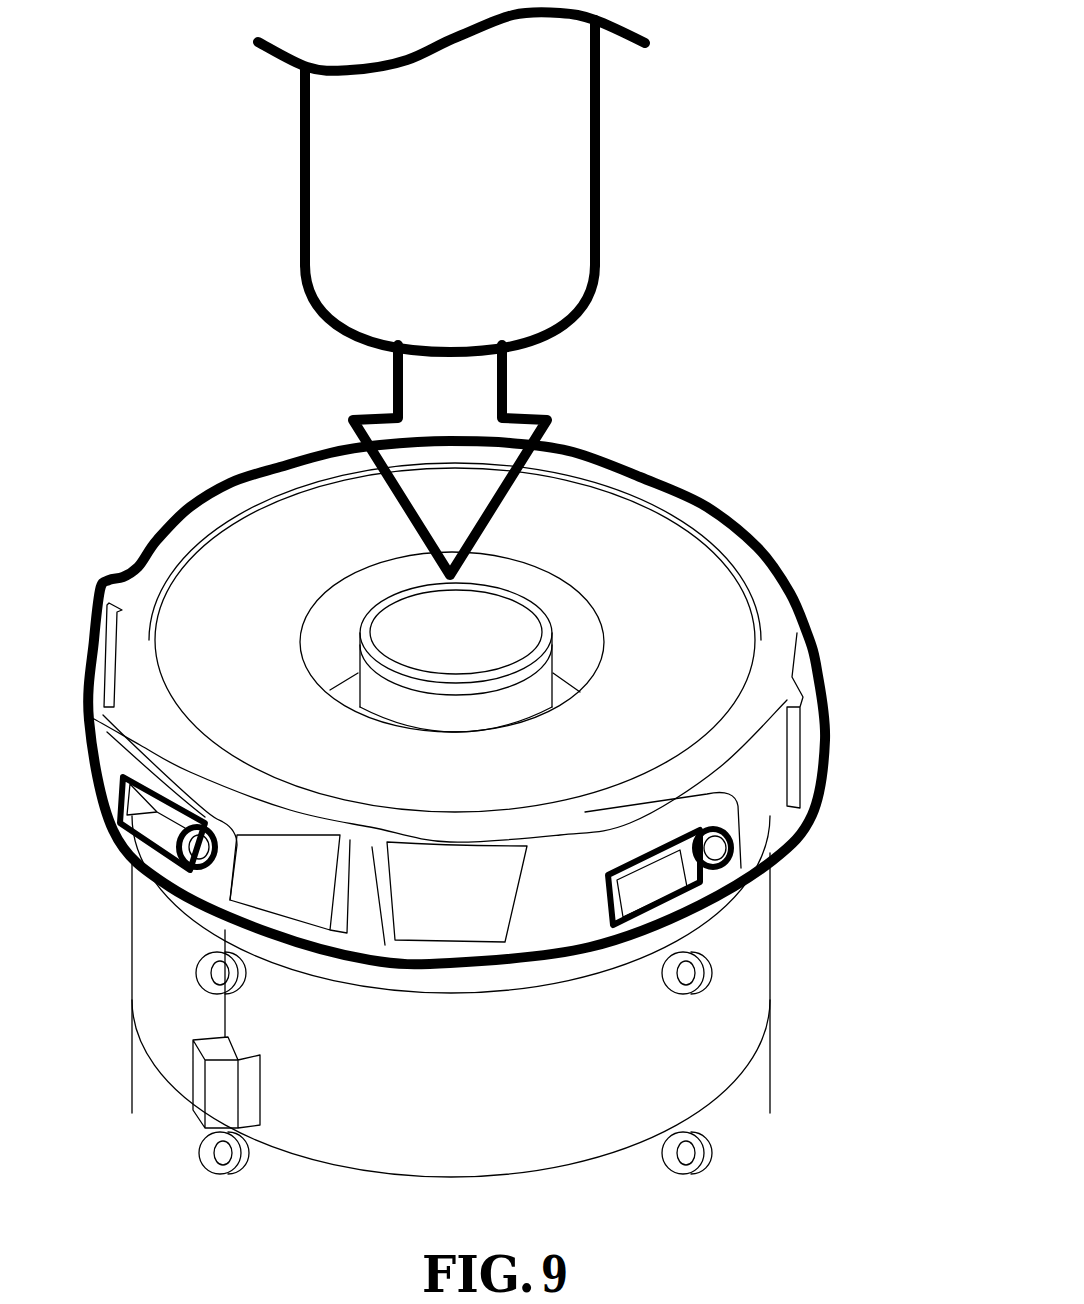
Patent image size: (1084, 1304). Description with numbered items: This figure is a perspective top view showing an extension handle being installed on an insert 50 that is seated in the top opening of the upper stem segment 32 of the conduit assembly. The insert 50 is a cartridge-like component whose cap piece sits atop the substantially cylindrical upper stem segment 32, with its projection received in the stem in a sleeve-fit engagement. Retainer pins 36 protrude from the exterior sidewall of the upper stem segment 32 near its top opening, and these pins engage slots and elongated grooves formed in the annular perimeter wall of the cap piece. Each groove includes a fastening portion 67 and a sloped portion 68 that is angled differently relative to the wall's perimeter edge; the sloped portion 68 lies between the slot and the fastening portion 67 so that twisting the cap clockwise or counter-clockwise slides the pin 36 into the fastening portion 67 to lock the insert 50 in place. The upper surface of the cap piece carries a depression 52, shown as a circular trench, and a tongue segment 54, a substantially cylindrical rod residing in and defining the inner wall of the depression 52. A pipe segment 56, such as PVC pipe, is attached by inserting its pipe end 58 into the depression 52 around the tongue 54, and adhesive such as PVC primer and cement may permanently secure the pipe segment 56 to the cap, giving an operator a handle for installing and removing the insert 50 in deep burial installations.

The upper stem segment 32 is at (600, 1077).
The retainer pin 36 is at (715, 850).
The insert 50 is at (119, 492).
The depression 52 is at (580, 657).
The tongue segment 54 is at (477, 620).
The pipe segment 56 is at (522, 170).
The pipe end 58 is at (553, 329).
The fastening portion 67 is at (670, 870).
The sloped portion 68 is at (623, 893).